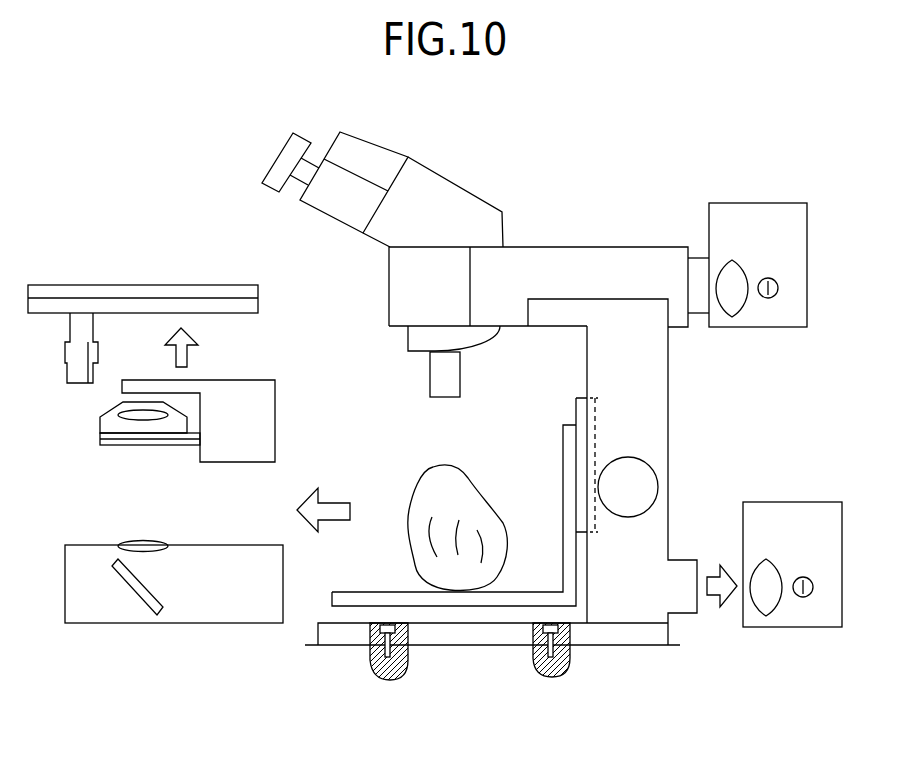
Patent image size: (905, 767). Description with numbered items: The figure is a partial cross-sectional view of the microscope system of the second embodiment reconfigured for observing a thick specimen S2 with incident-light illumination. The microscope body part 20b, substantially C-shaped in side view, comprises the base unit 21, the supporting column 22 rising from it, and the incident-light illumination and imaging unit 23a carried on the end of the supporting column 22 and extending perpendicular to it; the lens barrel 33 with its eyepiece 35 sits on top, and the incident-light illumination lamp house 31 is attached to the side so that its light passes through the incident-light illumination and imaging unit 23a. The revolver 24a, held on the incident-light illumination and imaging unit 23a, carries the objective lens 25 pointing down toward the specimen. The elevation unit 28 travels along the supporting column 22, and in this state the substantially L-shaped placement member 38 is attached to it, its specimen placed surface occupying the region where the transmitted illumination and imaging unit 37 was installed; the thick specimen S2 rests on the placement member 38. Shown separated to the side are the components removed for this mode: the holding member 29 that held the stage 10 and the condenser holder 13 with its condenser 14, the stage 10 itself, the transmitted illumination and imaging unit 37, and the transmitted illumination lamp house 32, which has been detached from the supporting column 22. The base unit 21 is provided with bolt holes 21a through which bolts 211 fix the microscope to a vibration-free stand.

The stage 10 is at (205, 288).
The condenser holder 13 is at (112, 443).
The condenser 14 is at (120, 415).
The microscope body part 20b is at (692, 361).
The base unit 21 is at (340, 635).
The bolt holes 21a is at (410, 642).
The bolt 211 is at (370, 634).
The supporting column 22 is at (668, 405).
The incident-light illumination and imaging unit 23a is at (643, 258).
The revolver 24a is at (408, 339).
The objective lens 25 is at (430, 372).
The elevation unit 28 is at (582, 442).
The holding member 29 is at (262, 430).
The incident-light illumination lamp house 31 is at (790, 239).
The transmitted illumination lamp house 32 is at (815, 508).
The lens barrel 33 is at (445, 193).
The eyepiece 35 is at (285, 152).
The transmitted illumination and imaging unit 37 is at (185, 605).
The placement member 38 is at (570, 555).
The thick specimen S2 is at (480, 495).